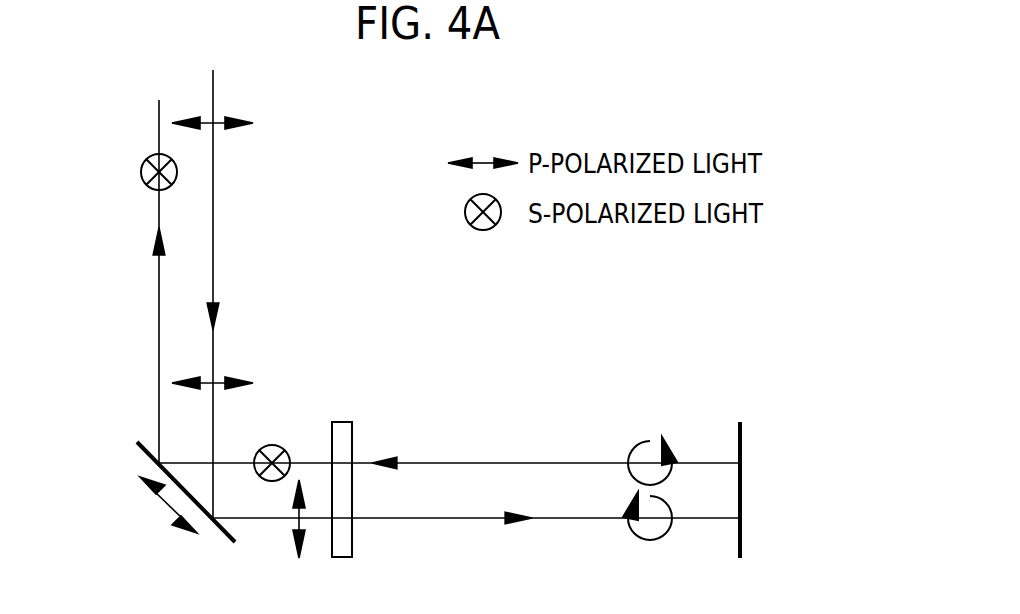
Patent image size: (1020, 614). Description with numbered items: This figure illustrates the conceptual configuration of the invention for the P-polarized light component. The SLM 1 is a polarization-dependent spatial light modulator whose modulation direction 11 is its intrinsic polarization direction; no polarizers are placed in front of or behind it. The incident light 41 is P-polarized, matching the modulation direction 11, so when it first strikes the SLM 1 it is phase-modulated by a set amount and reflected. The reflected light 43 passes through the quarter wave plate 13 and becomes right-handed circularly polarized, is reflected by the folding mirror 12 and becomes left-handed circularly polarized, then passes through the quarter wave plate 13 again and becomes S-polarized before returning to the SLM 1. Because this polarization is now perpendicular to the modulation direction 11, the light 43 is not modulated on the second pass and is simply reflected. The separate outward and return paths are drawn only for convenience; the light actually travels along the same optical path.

The SLM 1 is at (142, 460).
The modulation direction 11 is at (167, 507).
The folding mirror 12 is at (742, 430).
The quarter wave plate 13 is at (343, 431).
The incident light 41 is at (214, 205).
The reflected light 43 is at (428, 520).